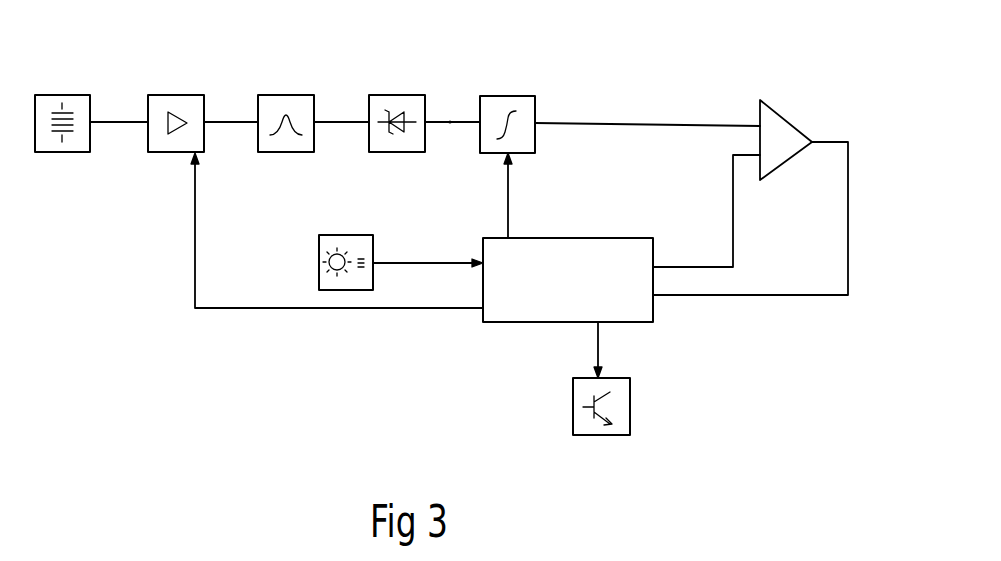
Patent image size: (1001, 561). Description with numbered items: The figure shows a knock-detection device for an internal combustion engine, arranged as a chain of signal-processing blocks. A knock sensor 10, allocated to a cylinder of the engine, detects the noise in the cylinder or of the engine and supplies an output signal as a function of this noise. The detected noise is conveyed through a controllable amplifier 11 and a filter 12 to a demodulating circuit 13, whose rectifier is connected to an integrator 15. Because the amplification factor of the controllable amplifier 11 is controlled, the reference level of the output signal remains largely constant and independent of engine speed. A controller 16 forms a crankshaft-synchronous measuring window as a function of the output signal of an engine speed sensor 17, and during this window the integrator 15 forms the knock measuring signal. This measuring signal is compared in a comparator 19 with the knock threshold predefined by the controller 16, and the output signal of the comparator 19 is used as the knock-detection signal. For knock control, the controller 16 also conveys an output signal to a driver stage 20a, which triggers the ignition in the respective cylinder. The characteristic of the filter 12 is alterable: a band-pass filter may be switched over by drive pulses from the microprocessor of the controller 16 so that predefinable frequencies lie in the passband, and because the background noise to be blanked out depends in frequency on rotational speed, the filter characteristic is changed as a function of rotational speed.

The knock sensor 10 is at (65, 155).
The controllable amplifier 11 is at (172, 155).
The filter 12 is at (272, 155).
The demodulating circuit 13 is at (400, 155).
The integrator 15 is at (505, 93).
The controller 16 is at (490, 325).
The engine speed sensor 17 is at (351, 298).
The comparator 19 is at (787, 113).
The driver stage 20a is at (631, 392).